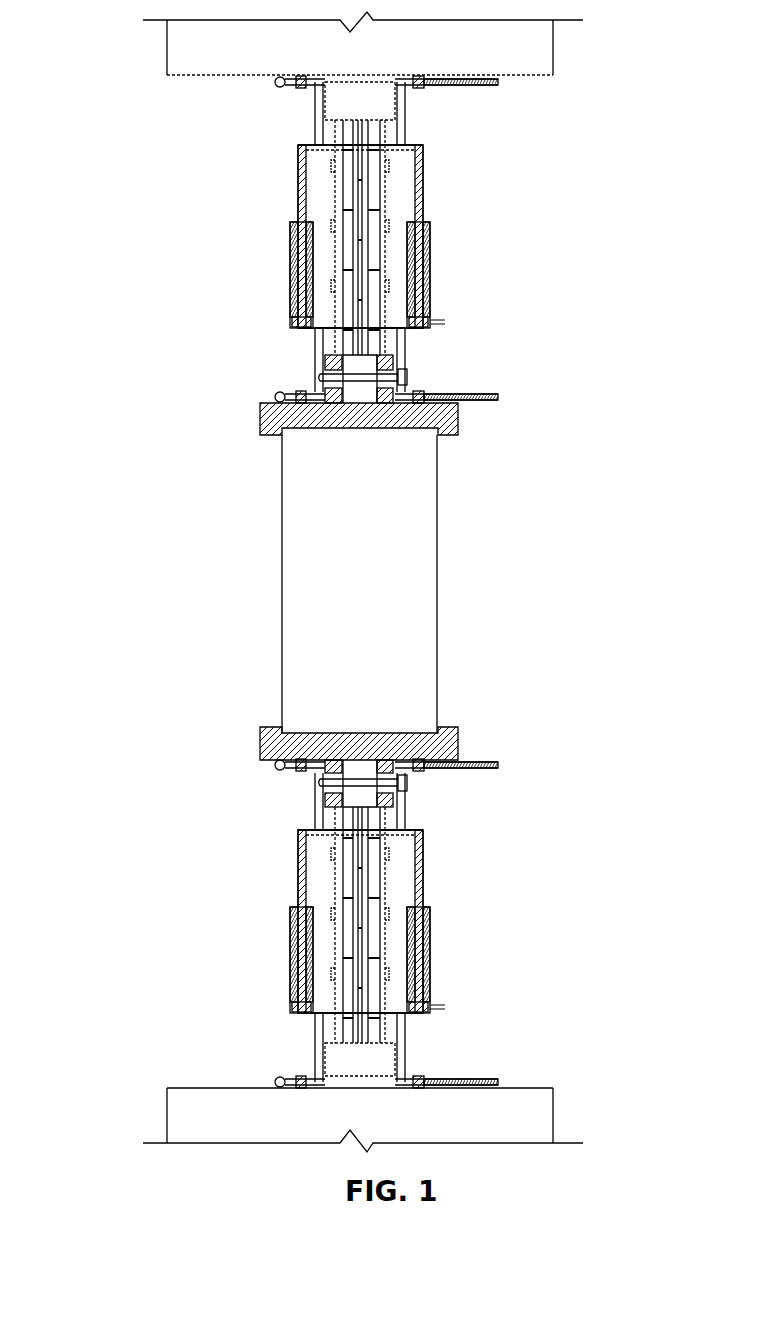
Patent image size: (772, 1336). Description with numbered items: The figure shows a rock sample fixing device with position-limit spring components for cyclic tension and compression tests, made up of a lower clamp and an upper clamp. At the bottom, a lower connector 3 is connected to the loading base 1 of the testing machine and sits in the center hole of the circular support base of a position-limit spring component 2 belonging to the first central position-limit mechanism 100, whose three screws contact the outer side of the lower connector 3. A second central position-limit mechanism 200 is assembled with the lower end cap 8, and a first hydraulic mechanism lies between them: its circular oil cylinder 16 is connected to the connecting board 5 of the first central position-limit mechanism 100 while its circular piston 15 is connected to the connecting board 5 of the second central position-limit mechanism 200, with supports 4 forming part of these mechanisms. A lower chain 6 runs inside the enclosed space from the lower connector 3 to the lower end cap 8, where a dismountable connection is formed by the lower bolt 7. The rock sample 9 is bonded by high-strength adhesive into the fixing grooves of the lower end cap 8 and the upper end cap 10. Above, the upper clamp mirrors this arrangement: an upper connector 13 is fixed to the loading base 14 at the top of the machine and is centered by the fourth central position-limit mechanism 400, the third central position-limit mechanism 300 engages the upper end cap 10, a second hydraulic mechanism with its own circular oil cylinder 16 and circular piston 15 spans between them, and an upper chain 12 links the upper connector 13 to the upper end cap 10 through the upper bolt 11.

The loading base at a bottom of a testing machine 1 is at (503, 1114).
The position-limit spring component 2 is at (287, 83).
The lower connector 3 is at (385, 1061).
The support 4 is at (318, 125).
The connecting board 5 is at (300, 144).
The lower chain 6 is at (410, 875).
The lower bolt 7 is at (383, 788).
The lower end cap 8 is at (460, 748).
The rock sample 9 is at (415, 577).
The upper end cap 10 is at (460, 415).
The upper bolt 11 is at (410, 375).
The upper chain 12 is at (410, 177).
The upper connecter 13 is at (375, 100).
The loading base at a top of the testing machine 14 is at (503, 50).
The circular piston 15 is at (422, 268).
The circular oil cylinder 16 is at (430, 297).
The first central position-limit mechanism 100 is at (186, 980).
The second central position-limit mechanism 200 is at (215, 760).
The third central position-limit mechanism 300 is at (215, 318).
The fourth central position-limit mechanism 400 is at (210, 82).